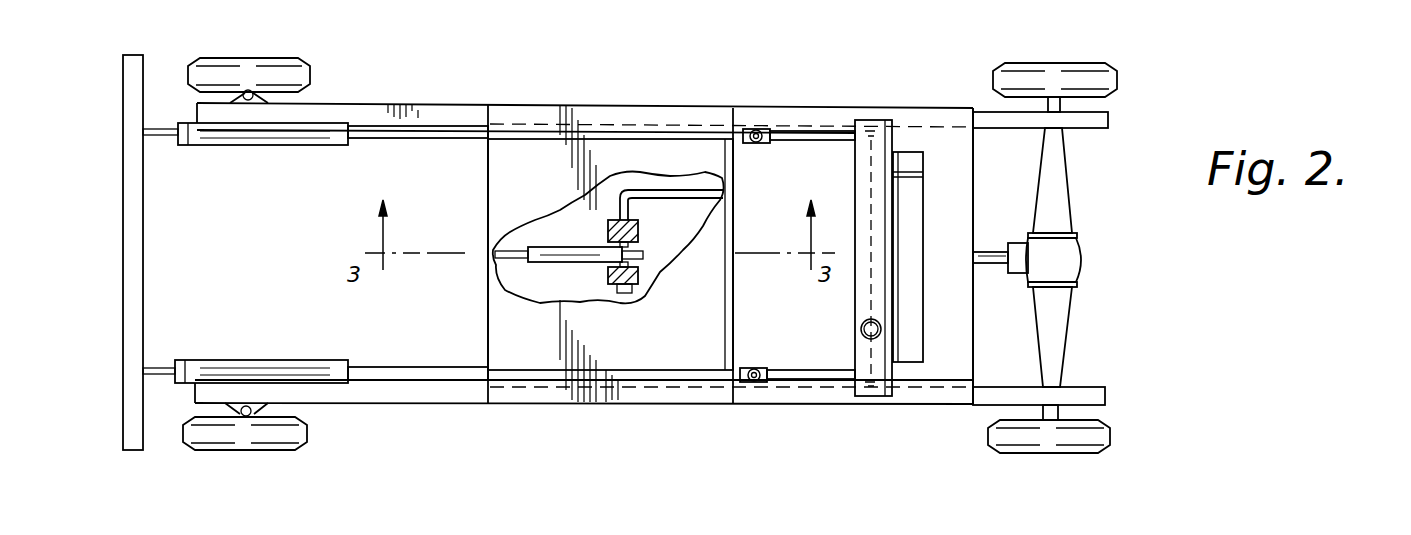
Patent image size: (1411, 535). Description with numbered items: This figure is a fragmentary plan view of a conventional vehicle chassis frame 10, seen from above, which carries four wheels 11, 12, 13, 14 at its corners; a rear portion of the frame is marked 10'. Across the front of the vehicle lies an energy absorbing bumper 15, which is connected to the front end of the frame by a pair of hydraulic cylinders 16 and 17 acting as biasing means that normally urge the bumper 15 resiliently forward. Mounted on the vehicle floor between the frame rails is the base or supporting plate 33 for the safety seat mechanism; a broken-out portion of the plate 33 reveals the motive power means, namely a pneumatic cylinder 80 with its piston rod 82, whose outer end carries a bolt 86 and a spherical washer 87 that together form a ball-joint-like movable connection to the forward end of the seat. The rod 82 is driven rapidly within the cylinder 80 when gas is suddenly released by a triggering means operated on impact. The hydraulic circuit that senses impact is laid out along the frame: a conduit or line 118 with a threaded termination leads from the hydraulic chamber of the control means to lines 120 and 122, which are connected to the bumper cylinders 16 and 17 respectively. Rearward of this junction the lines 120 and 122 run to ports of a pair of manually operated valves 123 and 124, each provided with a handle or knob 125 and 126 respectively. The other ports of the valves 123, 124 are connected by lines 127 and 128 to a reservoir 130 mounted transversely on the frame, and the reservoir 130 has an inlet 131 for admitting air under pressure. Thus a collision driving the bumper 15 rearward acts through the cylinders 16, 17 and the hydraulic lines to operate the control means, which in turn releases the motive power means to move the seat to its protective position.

The vehicle chassis frame 10 is at (1102, 123).
The rear frame portion 10' is at (951, 256).
The wheel 11 is at (212, 440).
The wheel 12 is at (277, 72).
The wheel 13 is at (1110, 437).
The wheel 14 is at (1112, 78).
The energy absorbing bumper 15 is at (142, 228).
The hydraulic cylinder 16 is at (290, 365).
The hydraulic cylinder 17 is at (290, 138).
The supporting plate 33 is at (621, 348).
The pneumatic cylinder 80 is at (558, 264).
The rod 82 is at (508, 246).
The bolt 86 is at (602, 294).
The spherical washer 87 is at (608, 232).
The conduit line 118 is at (696, 186).
The line 120 is at (445, 352).
The line 122 is at (430, 138).
The valve 123 is at (746, 384).
The valve 124 is at (748, 128).
The handle 125 is at (760, 385).
The handle 126 is at (762, 131).
The line 127 is at (820, 374).
The line 128 is at (798, 140).
The reservoir 130 is at (860, 298).
The inlet 131 is at (861, 330).